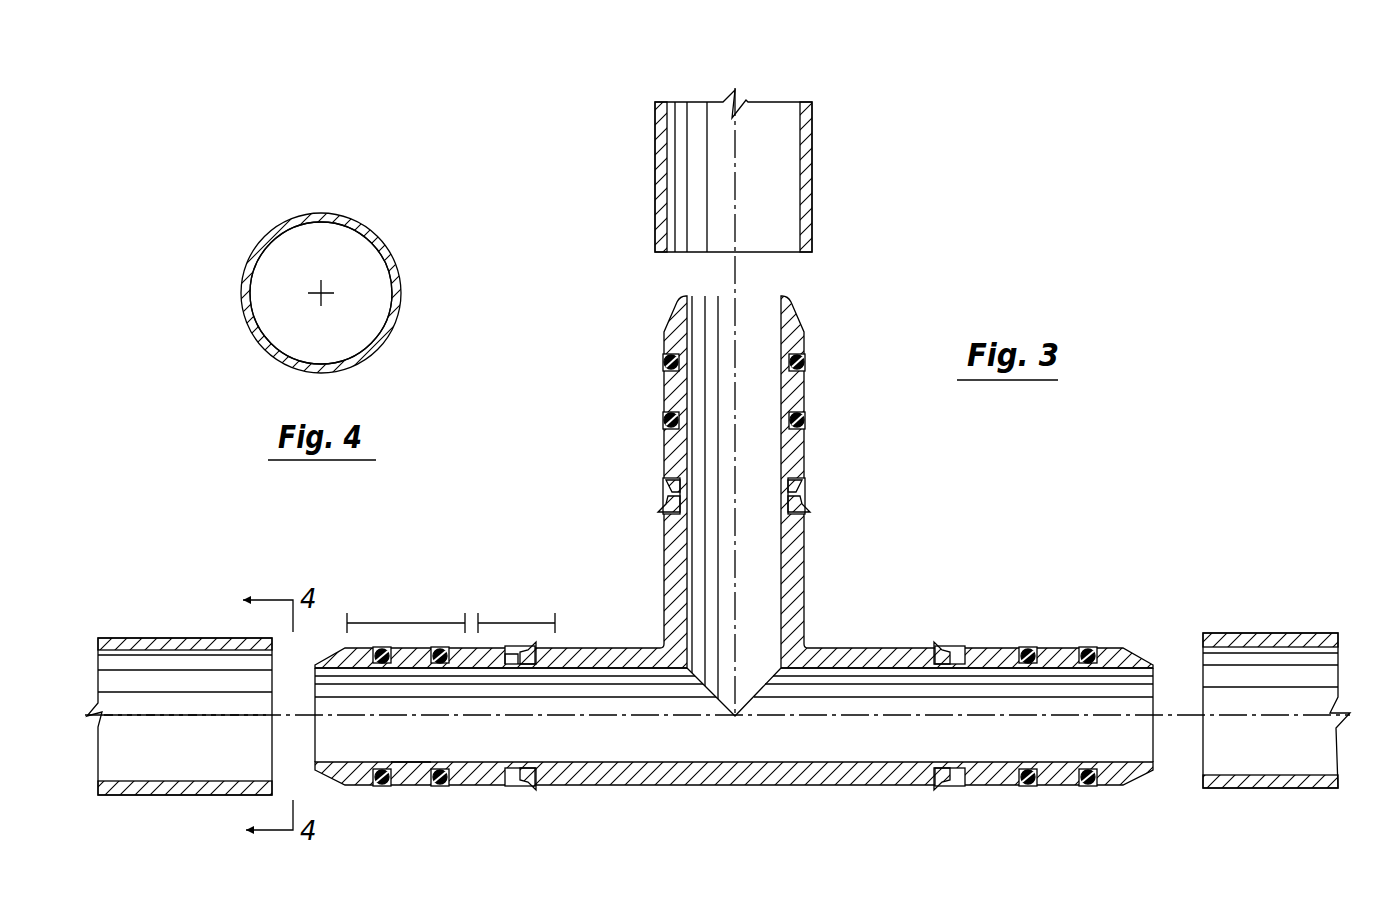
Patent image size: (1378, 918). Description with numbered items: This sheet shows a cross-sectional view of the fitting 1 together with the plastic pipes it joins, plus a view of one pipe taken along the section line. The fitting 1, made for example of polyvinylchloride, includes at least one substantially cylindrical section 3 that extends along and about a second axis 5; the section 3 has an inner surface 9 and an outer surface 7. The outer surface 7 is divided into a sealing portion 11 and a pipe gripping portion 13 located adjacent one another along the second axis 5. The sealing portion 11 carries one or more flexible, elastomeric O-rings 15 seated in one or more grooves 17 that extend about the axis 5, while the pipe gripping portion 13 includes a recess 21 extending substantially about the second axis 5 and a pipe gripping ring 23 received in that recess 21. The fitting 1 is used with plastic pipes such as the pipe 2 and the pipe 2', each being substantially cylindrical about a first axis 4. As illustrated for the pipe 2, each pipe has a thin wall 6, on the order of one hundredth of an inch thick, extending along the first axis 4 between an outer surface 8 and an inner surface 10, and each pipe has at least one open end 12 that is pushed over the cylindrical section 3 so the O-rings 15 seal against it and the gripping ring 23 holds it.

In FIG. 3, the fitting 1 is at (717, 482).
In FIG. 3, the plastic pipe 2 is at (201, 671).
In FIG. 4, the plastic pipe 2 is at (329, 258).
In FIG. 3, the plastic pipe 2' is at (680, 171).
In FIG. 3, the cylindrical section 3 is at (469, 584).
In FIG. 3, the first axis 4 is at (134, 720).
In FIG. 4, the first axis 4 is at (323, 291).
In FIG. 3, the second axis 5 is at (347, 716).
In FIG. 3, the wall 6 is at (128, 645).
In FIG. 4, the wall 6 is at (335, 222).
In FIG. 3, the outer surface 7 is at (604, 647).
In FIG. 3, the outer surface 8 is at (238, 640).
In FIG. 4, the outer surface 8 is at (388, 245).
In FIG. 3, the inner surface 9 is at (628, 667).
In FIG. 3, the inner surface 10 is at (246, 656).
In FIG. 4, the inner surface 10 is at (395, 275).
In FIG. 3, the sealing portion 11 is at (413, 622).
In FIG. 3, the open end 12 is at (258, 705).
In FIG. 4, the open end 12 is at (303, 285).
In FIG. 3, the pipe gripping portion 13 is at (518, 622).
In FIG. 3, the O-ring 15 is at (381, 786).
In FIG. 3, the groove 17 is at (410, 790).
In FIG. 3, the recess 21 is at (546, 787).
In FIG. 3, the pipe gripping ring 23 is at (511, 792).